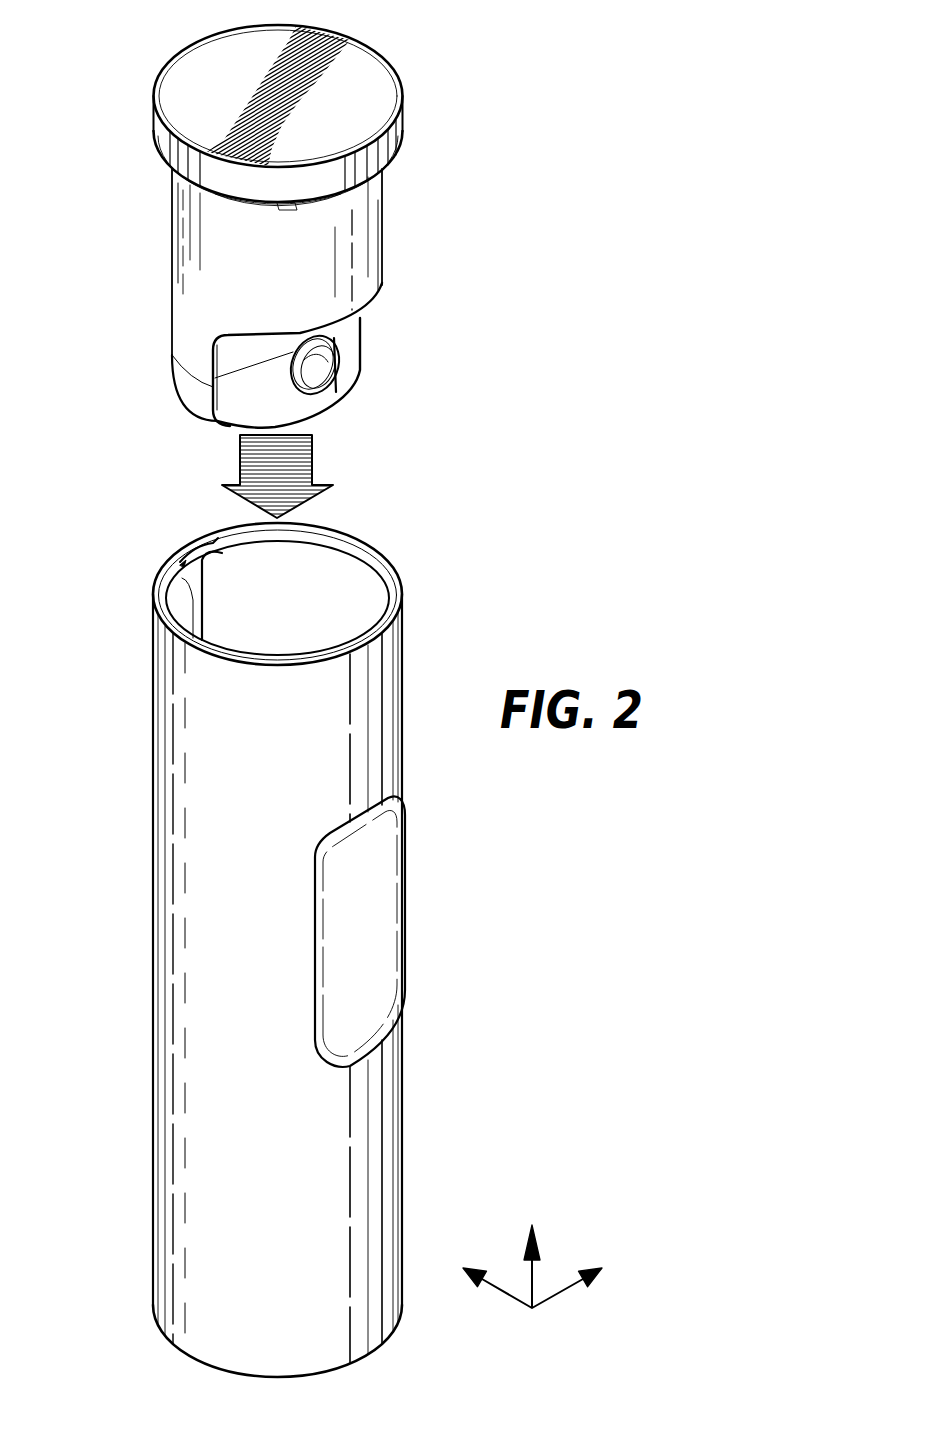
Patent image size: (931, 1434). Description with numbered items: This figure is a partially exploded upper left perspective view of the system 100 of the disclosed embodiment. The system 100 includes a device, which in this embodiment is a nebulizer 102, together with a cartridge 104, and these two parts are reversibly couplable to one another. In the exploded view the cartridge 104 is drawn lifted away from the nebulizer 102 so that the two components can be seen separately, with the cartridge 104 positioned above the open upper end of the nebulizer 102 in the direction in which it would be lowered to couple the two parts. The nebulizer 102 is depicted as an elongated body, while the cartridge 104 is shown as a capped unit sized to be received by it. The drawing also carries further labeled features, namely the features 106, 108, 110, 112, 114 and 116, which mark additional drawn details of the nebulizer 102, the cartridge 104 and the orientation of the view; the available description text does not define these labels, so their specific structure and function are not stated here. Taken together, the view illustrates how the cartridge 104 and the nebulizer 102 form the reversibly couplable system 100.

The system 100 is at (425, 60).
The nebulizer 102 is at (172, 943).
The cartridge 104 is at (176, 80).
The button 106 is at (387, 932).
The coordinate axes 108 is at (533, 1256).
The receptacle interior 110 is at (253, 577).
The cartridge / rim 112 is at (192, 186).
The mouthpiece housing 114 is at (357, 323).
The outlet opening 116 is at (303, 370).